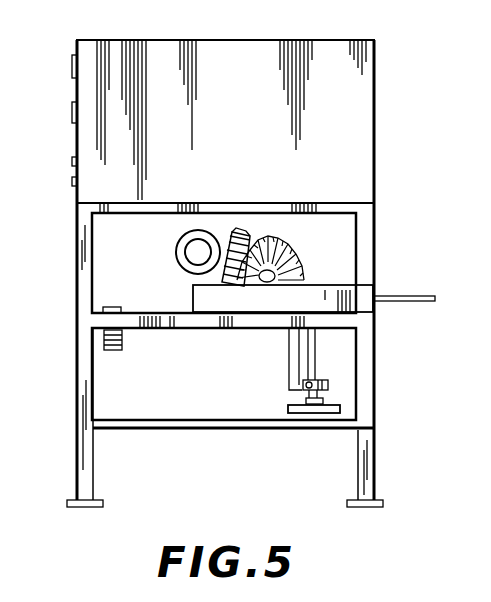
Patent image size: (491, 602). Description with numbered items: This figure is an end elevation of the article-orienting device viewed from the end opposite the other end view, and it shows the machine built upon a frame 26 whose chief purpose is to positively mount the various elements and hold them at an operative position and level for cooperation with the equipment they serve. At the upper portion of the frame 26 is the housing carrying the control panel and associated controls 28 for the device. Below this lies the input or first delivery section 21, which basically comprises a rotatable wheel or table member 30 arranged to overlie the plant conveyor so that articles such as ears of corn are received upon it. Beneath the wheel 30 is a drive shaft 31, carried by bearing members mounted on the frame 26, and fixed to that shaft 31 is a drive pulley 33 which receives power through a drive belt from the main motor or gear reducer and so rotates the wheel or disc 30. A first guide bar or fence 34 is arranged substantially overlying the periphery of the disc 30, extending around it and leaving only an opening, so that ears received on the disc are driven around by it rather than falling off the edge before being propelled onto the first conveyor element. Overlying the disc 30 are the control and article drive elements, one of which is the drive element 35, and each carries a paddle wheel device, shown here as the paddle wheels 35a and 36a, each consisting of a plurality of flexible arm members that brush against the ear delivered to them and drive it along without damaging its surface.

The input or first delivery section 21 is at (380, 218).
The frame 26 is at (72, 376).
The control panel and associated controls 28 is at (253, 100).
The rotatable wheel or table member 30 is at (397, 296).
The drive shaft 31 is at (318, 372).
The drive pulley 33 is at (290, 408).
The first guide bar or fence 34 is at (216, 315).
The control and article drive element 35 is at (195, 258).
The paddle wheel device 35a is at (235, 230).
The paddle wheel device 36a is at (268, 236).